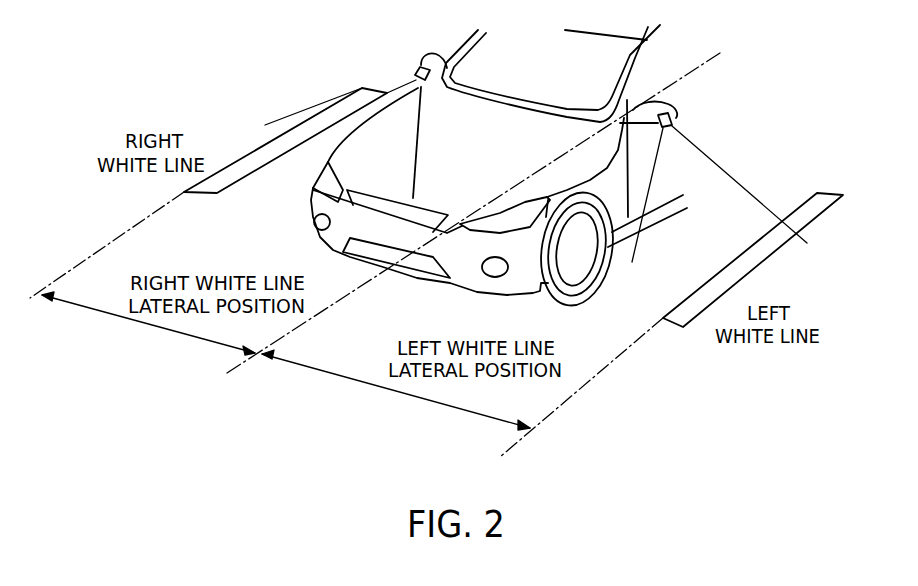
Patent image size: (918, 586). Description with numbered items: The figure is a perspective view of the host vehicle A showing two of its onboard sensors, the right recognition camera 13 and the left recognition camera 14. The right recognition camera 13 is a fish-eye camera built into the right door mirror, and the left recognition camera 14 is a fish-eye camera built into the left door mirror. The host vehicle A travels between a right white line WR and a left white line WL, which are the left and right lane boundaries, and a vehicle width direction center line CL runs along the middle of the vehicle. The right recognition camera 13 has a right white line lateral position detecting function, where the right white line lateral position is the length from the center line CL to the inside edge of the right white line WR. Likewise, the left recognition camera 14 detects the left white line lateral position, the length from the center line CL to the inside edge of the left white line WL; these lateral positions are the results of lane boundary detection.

The right recognition camera 13 is at (413, 75).
The left recognition camera 14 is at (677, 123).
The host vehicle A is at (546, 78).
The right white line WR is at (252, 164).
The left white line WL is at (685, 312).
The vehicle width direction center line CL is at (350, 293).